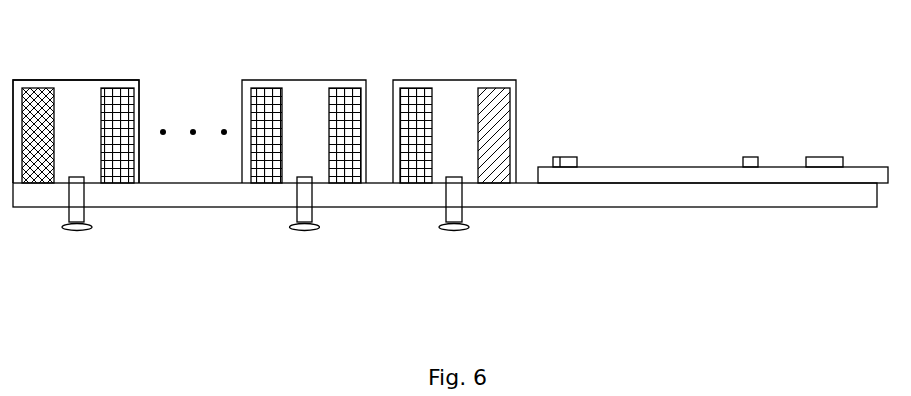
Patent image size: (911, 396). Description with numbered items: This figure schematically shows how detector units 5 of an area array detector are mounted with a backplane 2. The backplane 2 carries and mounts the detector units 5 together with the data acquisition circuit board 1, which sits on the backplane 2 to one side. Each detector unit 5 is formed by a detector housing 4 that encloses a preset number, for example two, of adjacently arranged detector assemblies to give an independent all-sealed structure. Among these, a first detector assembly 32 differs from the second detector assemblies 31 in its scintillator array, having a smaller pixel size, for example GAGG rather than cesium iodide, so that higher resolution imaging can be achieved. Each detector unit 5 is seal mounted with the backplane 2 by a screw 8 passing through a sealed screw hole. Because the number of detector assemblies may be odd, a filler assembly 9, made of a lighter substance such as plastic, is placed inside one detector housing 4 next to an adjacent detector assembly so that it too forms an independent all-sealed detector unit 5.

The data acquisition circuit board 1 is at (636, 172).
The backplane 2 is at (532, 195).
The detector housing 4 is at (452, 80).
The detector unit 5 is at (69, 160).
The screw 8 is at (440, 227).
The filler assembly 9 is at (495, 88).
The second detector assembly 31 is at (253, 88).
The first detector assembly 32 is at (37, 88).